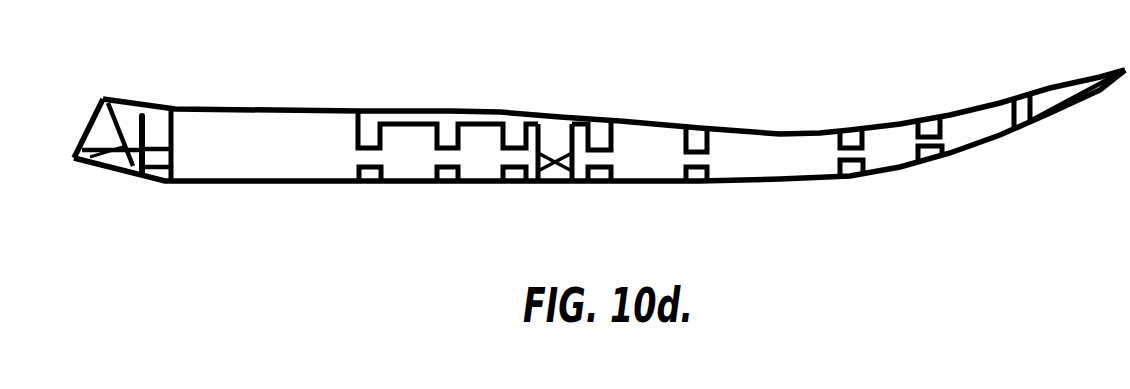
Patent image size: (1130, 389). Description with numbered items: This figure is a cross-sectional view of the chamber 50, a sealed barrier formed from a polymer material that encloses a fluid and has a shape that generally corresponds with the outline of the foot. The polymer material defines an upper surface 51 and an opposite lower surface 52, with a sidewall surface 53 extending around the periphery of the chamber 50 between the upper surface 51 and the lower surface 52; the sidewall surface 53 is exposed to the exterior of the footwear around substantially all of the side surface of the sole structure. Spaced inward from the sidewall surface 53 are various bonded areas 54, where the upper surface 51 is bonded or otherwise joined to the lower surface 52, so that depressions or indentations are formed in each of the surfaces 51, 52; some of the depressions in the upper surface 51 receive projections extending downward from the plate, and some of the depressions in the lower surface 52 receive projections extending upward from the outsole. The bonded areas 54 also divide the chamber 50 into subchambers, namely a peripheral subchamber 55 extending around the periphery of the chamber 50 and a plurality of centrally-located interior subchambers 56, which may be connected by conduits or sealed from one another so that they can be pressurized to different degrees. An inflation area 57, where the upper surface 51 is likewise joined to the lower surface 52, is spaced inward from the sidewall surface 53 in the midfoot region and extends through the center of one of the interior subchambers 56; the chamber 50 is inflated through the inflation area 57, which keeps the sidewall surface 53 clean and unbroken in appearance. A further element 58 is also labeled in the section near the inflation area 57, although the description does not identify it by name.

The chamber 50 is at (187, 103).
The upper surface 51 is at (777, 130).
The lower surface 52 is at (773, 184).
The sidewall surface 53 is at (80, 137).
The bonded areas 54 is at (157, 183).
The peripheral subchamber 55 is at (104, 98).
The interior subchambers 56 is at (266, 106).
The inflation area 57 is at (557, 172).
The central rib 58 is at (556, 150).